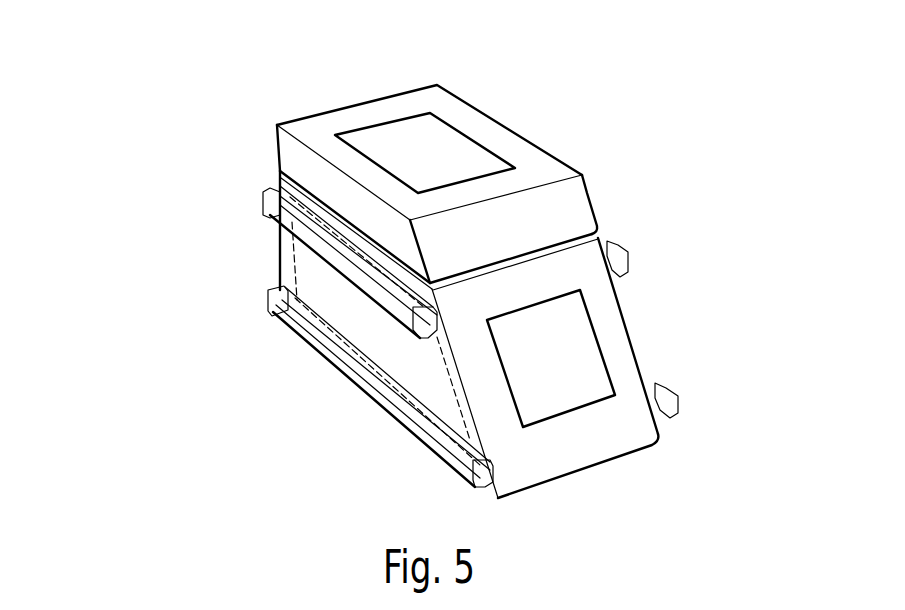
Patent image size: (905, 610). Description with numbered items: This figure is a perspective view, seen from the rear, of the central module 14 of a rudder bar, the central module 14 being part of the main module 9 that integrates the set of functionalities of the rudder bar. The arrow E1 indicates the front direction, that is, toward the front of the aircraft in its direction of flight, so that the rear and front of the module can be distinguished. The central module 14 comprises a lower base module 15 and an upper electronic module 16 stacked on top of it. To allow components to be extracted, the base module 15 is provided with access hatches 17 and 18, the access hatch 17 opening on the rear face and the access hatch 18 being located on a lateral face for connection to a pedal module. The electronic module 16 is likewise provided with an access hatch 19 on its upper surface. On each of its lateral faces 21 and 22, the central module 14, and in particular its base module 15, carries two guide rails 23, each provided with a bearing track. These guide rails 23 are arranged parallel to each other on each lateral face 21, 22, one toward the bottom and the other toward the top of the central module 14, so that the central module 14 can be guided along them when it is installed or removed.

The main module 9 is at (178, 177).
The central module 14 is at (555, 122).
The base module 15 is at (630, 315).
The electronic module 16 is at (595, 199).
The access hatch 17 is at (585, 407).
The access hatch 18 is at (283, 270).
The access hatch 19 is at (467, 133).
The lateral face 21 is at (653, 342).
The lateral face 22 is at (263, 260).
The guide rails 23 is at (263, 200).
The arrow indicating the front direction E1 is at (243, 28).